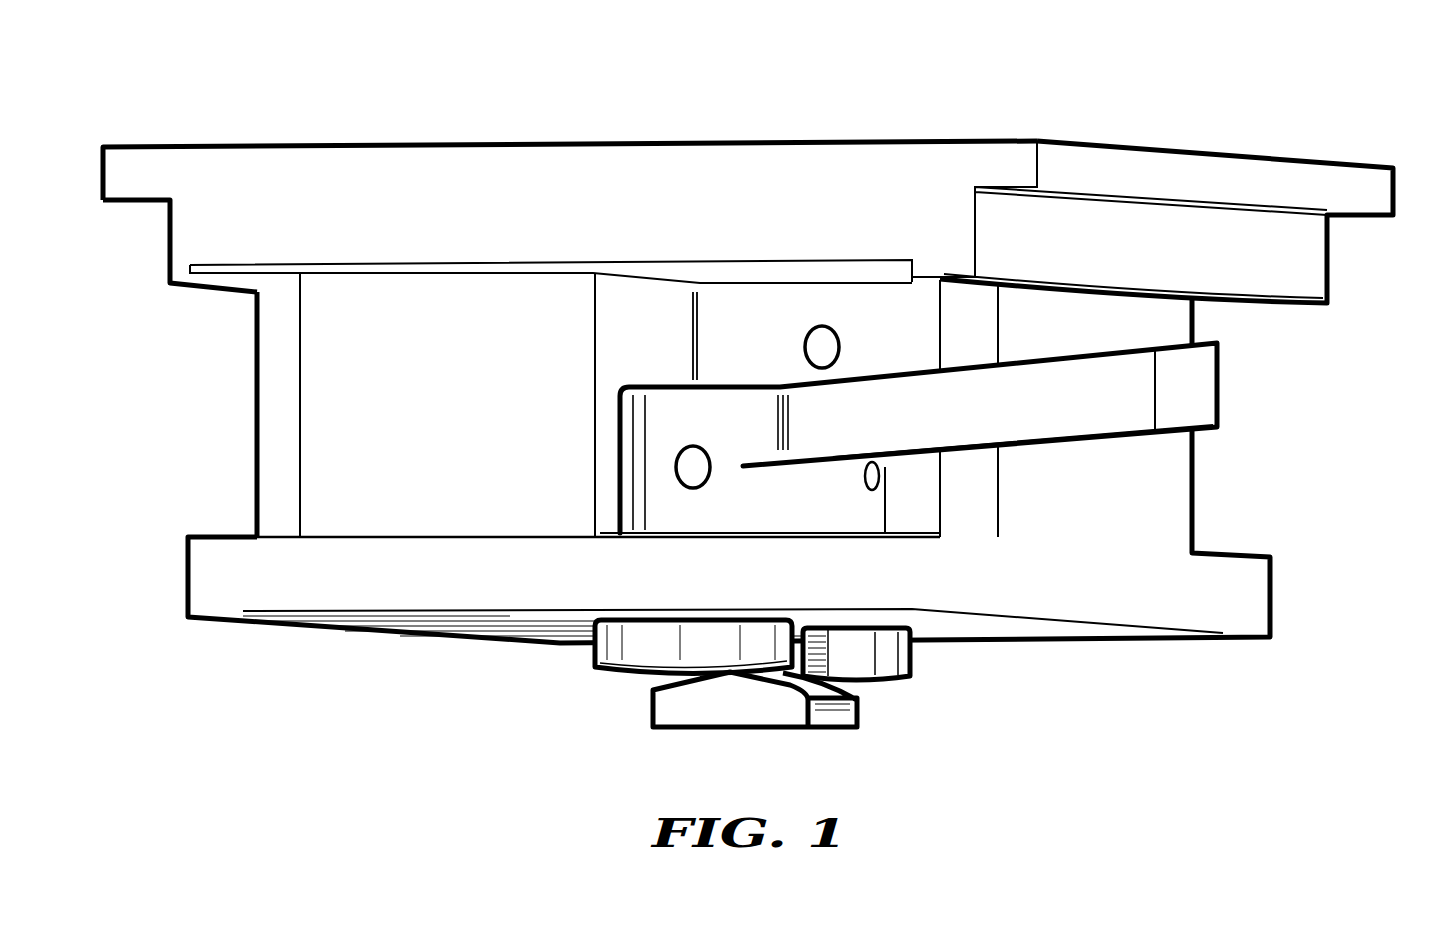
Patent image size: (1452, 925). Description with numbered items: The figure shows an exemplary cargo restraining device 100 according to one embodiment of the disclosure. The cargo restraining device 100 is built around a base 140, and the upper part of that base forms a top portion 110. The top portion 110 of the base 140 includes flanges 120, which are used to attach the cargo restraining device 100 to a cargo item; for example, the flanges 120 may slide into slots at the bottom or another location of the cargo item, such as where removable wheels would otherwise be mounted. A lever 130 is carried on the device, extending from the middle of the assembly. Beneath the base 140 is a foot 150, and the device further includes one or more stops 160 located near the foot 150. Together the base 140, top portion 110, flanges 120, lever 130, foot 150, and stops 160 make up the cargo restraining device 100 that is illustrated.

The cargo restraining device 100 is at (752, 43).
The top portion 110 is at (651, 165).
The flanges 120 is at (1398, 188).
The lever 130 is at (1220, 388).
The base 140 is at (257, 410).
The foot 150 is at (740, 693).
The stops 160 is at (918, 658).